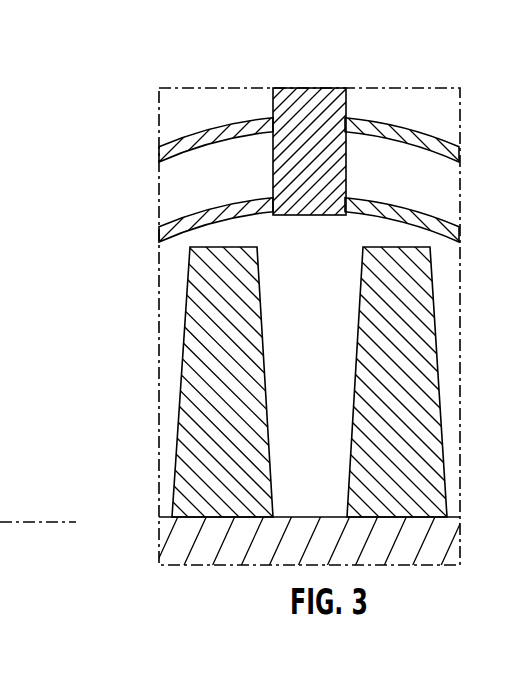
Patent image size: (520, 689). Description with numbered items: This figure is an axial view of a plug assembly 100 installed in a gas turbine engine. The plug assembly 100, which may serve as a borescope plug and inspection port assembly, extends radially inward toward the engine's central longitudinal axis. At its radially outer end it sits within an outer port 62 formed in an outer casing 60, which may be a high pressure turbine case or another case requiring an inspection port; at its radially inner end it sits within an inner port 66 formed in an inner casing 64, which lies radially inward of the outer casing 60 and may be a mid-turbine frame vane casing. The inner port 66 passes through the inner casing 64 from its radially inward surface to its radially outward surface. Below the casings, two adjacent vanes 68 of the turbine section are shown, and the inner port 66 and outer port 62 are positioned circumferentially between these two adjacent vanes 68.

The outer casing 60 is at (215, 117).
The outer port 62 is at (357, 118).
The inner casing 64 is at (193, 213).
The inner port 66 is at (356, 197).
The vanes 68 is at (403, 418).
The plug assembly 100 is at (313, 90).